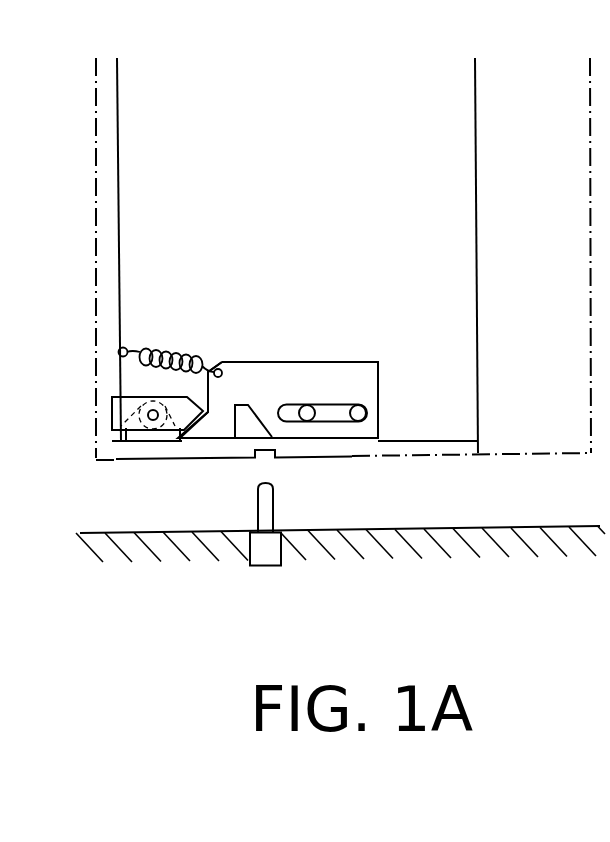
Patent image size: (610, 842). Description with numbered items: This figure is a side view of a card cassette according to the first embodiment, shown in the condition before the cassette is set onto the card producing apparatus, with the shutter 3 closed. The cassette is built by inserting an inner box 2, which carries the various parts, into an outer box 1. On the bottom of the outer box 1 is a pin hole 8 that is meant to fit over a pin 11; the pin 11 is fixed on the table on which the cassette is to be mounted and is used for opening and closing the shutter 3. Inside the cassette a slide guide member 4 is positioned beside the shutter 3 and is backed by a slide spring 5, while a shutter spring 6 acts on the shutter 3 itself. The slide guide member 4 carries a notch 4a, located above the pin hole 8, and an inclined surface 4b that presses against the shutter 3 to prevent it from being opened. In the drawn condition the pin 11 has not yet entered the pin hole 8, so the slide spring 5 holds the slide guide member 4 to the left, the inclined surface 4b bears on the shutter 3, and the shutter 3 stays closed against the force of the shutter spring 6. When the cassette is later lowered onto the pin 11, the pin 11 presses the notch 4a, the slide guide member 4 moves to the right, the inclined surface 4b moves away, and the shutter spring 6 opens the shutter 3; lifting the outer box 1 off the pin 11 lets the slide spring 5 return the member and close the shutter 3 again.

The outer box 1 is at (95, 113).
The inner box 2 is at (118, 170).
The shutter 3 is at (112, 417).
The slide guide member 4 is at (212, 425).
The notch 4a is at (248, 425).
The inclined surface 4b is at (208, 412).
The slide spring 5 is at (150, 350).
The shutter spring 6 is at (115, 448).
The pin hole 8 is at (268, 458).
The pin 11 is at (258, 512).